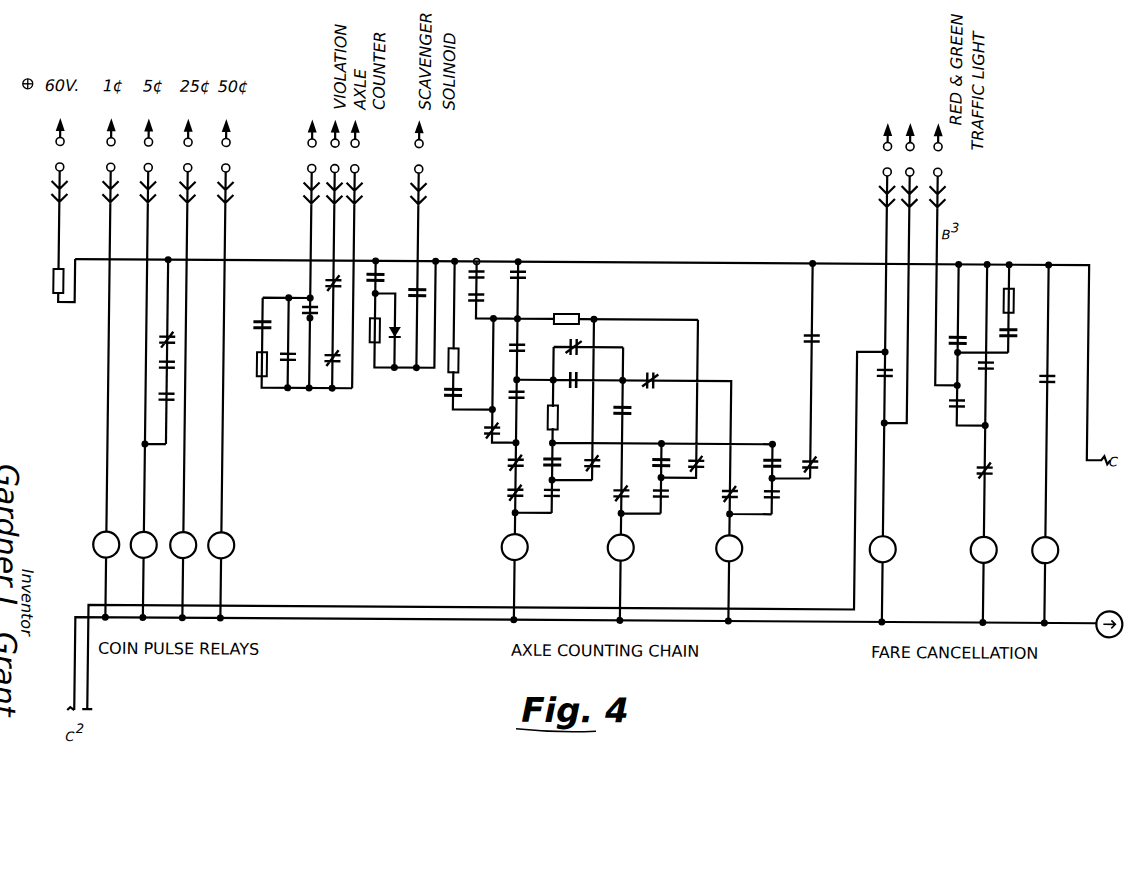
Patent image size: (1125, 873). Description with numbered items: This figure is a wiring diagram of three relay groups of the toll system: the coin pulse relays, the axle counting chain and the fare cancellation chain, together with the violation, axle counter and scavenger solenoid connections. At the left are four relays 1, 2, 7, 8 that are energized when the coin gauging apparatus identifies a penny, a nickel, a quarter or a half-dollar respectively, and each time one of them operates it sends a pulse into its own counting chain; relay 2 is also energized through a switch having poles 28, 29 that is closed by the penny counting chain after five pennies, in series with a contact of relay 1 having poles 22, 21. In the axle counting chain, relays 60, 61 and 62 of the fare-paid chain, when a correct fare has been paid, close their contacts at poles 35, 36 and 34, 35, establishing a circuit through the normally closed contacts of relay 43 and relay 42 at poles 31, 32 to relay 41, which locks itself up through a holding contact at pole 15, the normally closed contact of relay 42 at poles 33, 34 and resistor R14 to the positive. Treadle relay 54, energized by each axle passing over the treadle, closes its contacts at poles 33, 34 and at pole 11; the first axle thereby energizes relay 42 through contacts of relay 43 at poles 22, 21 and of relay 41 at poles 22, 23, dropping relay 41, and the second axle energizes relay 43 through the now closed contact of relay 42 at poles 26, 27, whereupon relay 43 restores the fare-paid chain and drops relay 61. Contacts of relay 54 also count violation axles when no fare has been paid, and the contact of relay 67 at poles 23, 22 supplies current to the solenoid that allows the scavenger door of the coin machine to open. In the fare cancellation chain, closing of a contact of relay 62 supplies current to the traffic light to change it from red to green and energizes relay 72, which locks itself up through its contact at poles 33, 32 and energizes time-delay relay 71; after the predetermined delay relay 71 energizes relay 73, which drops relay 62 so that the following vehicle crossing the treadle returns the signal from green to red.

The penny relay 1 is at (107, 412).
The nickel relay 2 is at (149, 412).
The quarter relay 7 is at (184, 413).
The half-dollar relay 8 is at (222, 413).
The switch pole 11 is at (171, 344).
The switch pole 15 is at (551, 496).
The switch pole 21 is at (171, 400).
The switch pole 22 is at (171, 400).
The switch pole 23 is at (411, 292).
The switch pole 26 is at (571, 382).
The switch pole 27 is at (571, 382).
The switch pole 28 is at (172, 369).
The switch pole 29 is at (172, 369).
The switch pole 31 is at (287, 356).
The switch pole 32 is at (287, 356).
The switch pole 33 is at (516, 350).
The switch pole 34 is at (475, 306).
The switch pole 35 is at (475, 280).
The switch pole 36 is at (475, 280).
The axle counting relay 41 is at (516, 440).
The axle counting relay 42 is at (635, 485).
The axle counting relay 43 is at (728, 567).
The treadle relay 54 is at (310, 311).
The fare-paid counting chain relay 60 is at (331, 357).
The fare-paid counting chain relay 61 is at (333, 283).
The fare-paid counting chain relay 62 is at (516, 281).
The scavenger relay 67 is at (411, 292).
The time-delay relay 71 is at (1046, 443).
The fare cancellation relay 72 is at (985, 443).
The fare cancellation relay 73 is at (889, 417).
The resistor R14 is at (607, 311).